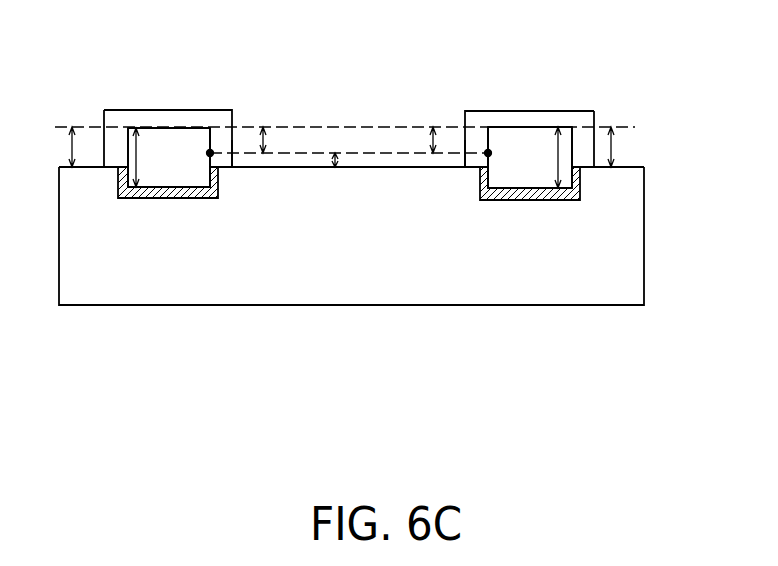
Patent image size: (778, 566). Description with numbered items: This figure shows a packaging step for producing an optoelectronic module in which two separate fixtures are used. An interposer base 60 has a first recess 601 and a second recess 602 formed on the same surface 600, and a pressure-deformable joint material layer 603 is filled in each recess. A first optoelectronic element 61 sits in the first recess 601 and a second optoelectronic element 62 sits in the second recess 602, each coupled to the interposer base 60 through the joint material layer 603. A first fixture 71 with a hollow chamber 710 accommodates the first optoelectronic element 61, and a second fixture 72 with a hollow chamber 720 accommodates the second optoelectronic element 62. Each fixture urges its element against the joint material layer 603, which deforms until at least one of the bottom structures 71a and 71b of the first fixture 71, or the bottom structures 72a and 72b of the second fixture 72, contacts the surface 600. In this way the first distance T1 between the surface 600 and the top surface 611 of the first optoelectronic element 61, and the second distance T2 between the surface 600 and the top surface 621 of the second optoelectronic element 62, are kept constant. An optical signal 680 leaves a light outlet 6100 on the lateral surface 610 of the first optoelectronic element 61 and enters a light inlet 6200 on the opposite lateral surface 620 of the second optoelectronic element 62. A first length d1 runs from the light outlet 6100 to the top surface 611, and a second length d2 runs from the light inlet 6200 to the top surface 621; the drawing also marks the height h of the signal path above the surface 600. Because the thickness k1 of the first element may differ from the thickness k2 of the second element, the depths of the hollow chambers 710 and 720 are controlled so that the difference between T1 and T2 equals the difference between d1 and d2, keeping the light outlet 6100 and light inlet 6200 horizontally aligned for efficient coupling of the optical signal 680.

The interposer base 60 is at (602, 297).
The surface of the interposer base 600 is at (637, 166).
The first recess 601 is at (148, 200).
The second recess 602 is at (528, 200).
The joint material layer 603 is at (160, 200).
The first optoelectronic element 61 is at (169, 157).
The lateral surface of the first optoelectronic element 610 is at (211, 129).
The top surface of the first optoelectronic element 611 is at (200, 128).
The light outlet 6100 is at (210, 154).
The second optoelectronic element 62 is at (530, 157).
The lateral surface of the second optoelectronic element 620 is at (488, 127).
The top surface of the second optoelectronic element 621 is at (553, 127).
The light inlet 6200 is at (488, 155).
The first fixture 71 is at (118, 118).
The bottom structure of the first fixture 71a is at (118, 148).
The bottom structure of the first fixture 71b is at (229, 160).
The hollow chamber 710 is at (148, 132).
The second fixture 72 is at (567, 118).
The bottom structure of the second fixture 72a is at (475, 160).
The bottom structure of the second fixture 72b is at (588, 160).
The hollow chamber 720 is at (517, 133).
The optical signal 680 is at (370, 153).
The first distance T1 is at (53, 147).
The second distance T2 is at (626, 147).
The first length d1 is at (282, 140).
The second length d2 is at (414, 140).
The height h is at (333, 160).
The thickness of the first optoelectronic element k1 is at (118, 200).
The thickness of the second optoelectronic element k2 is at (577, 200).